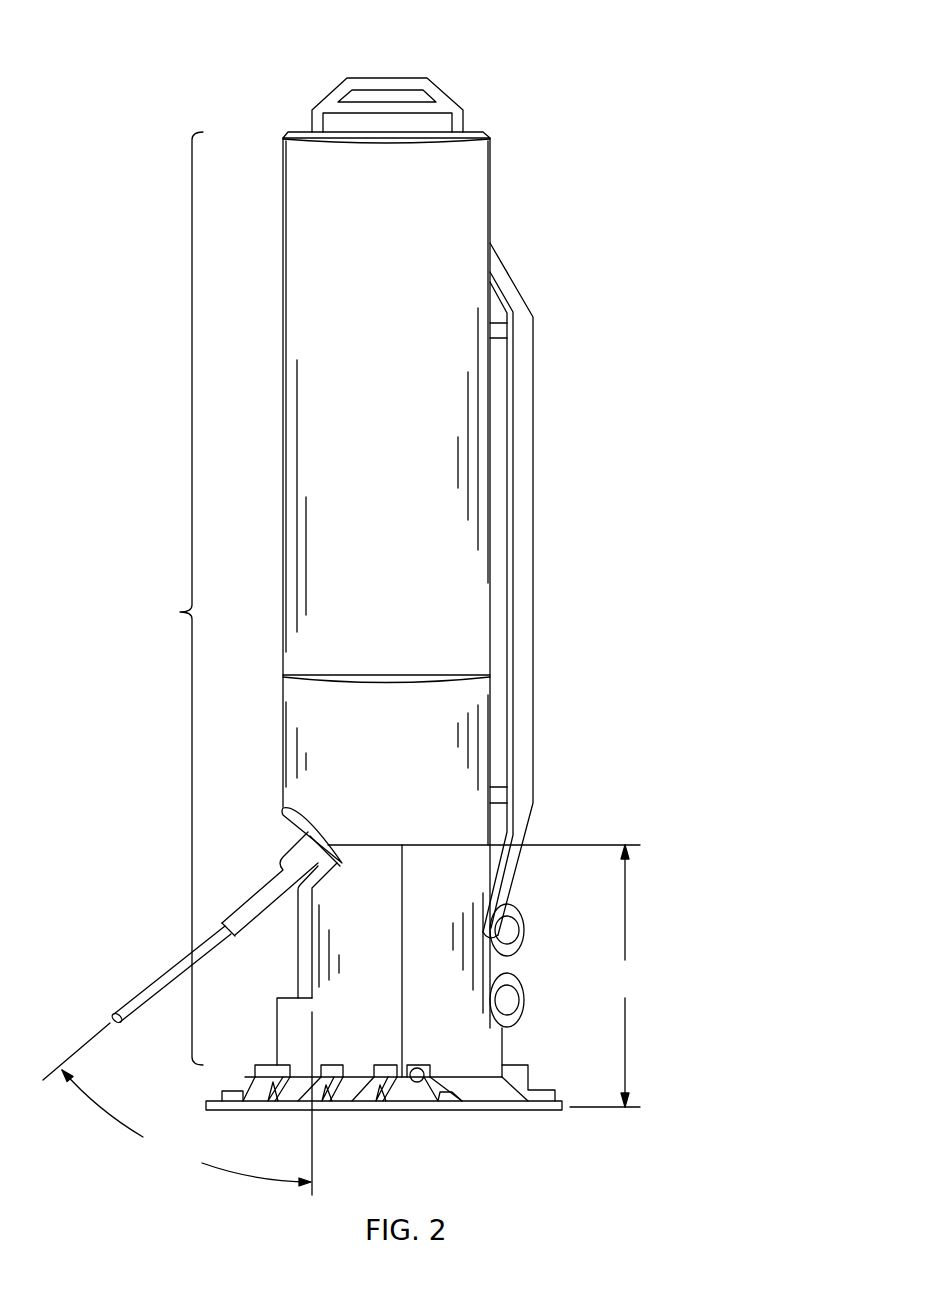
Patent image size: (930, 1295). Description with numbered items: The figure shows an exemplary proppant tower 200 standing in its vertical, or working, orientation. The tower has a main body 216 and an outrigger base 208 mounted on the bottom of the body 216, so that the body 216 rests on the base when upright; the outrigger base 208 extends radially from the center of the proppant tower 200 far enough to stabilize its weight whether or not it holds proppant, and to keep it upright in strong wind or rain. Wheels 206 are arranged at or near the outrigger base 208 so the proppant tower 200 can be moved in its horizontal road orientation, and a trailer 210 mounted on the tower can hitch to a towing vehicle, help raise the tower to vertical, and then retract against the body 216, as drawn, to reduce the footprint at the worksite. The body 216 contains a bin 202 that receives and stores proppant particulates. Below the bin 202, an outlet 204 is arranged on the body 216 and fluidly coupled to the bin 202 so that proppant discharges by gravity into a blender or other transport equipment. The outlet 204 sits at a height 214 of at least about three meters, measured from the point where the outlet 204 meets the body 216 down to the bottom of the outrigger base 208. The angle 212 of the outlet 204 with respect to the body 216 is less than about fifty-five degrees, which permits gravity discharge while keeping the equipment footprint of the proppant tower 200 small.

The proppant tower 200 is at (472, 48).
The bin 202 is at (283, 410).
The outlet 204 is at (240, 907).
The wheels 206 is at (524, 910).
The outrigger base 208 is at (501, 1110).
The trailer 210 is at (334, 94).
The angle 212 is at (177, 1103).
The height 214 is at (607, 976).
The main body 216 is at (169, 598).